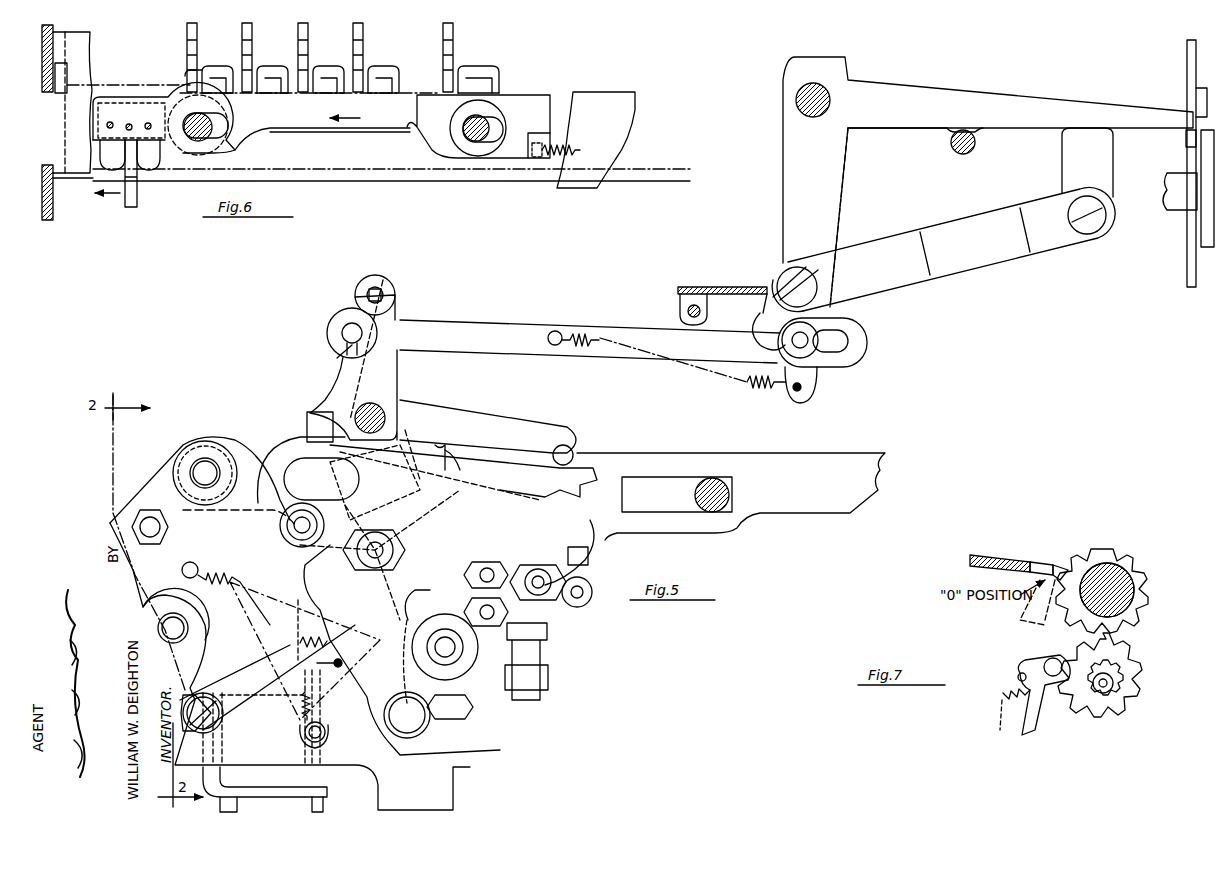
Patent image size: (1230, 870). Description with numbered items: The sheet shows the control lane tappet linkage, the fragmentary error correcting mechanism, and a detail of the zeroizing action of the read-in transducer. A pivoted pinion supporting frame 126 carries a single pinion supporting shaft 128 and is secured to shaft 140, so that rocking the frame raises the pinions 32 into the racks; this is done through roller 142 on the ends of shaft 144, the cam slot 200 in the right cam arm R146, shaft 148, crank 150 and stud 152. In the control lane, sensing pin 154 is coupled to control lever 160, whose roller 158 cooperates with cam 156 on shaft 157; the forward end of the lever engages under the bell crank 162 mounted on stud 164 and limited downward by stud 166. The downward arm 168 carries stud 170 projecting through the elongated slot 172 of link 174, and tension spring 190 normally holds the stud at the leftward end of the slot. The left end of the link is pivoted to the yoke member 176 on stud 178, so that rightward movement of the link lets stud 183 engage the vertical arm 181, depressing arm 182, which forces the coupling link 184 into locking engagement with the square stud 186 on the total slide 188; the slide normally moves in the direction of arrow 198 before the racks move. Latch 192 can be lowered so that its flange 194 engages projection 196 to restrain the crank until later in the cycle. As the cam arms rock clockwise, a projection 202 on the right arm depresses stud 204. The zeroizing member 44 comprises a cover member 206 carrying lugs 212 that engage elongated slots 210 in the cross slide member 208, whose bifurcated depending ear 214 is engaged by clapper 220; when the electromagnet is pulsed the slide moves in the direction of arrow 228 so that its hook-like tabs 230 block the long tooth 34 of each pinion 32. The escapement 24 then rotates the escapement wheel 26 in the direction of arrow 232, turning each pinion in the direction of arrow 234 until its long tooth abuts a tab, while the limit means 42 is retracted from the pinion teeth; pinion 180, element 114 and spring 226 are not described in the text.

In FIG. 7, the escapement 24 is at (998, 703).
In FIG. 7, the escapement wheel 26 is at (1147, 650).
In FIG. 6, the pinion 32 is at (187, 43).
In FIG. 5, the pinion 32 is at (438, 442).
In FIG. 7, the pinion 32 is at (1132, 555).
In FIG. 7, the long tooth 34 is at (1158, 572).
In FIG. 6, the limit means 42 is at (185, 80).
In FIG. 7, the limit means 42 is at (1020, 620).
In FIG. 6, the zeroizing member 44 is at (535, 82).
In FIG. 7, the zeroizing member 44 is at (982, 553).
In FIG. 7, the small pinion 114 is at (1100, 700).
In FIG. 6, the pinion supporting frame 126 is at (52, 214).
In FIG. 5, the pinion supporting frame 126 is at (240, 440).
In FIG. 7, the pinion supporting shaft 128 is at (1125, 585).
In FIG. 5, the shaft 140 is at (205, 473).
In FIG. 5, the roller 142 is at (450, 448).
In FIG. 5, the shaft 144 is at (408, 445).
In FIG. 5, the right cam arm R146 is at (270, 460).
In FIG. 5, the shaft 148 is at (416, 730).
In FIG. 5, the crank 150 is at (425, 620).
In FIG. 5, the stud 152 is at (400, 558).
In FIG. 5, the sensing pin 154 is at (1190, 62).
In FIG. 5, the cam 156 is at (1189, 245).
In FIG. 5, the shaft 157 is at (1170, 192).
In FIG. 5, the roller 158 is at (1196, 100).
In FIG. 5, the control lever 160 is at (1186, 140).
In FIG. 5, the bell crank 162 is at (1078, 128).
In FIG. 5, the stud 164 is at (800, 95).
In FIG. 5, the stud 166 is at (952, 147).
In FIG. 5, the downward arm 168 is at (808, 195).
In FIG. 5, the stud 170 is at (805, 345).
In FIG. 5, the elongated slot 172 is at (845, 340).
In FIG. 5, the link 174 is at (525, 348).
In FIG. 5, the yoke member 176 is at (348, 365).
In FIG. 5, the stud 178 is at (372, 405).
In FIG. 5, the cam 180 is at (360, 467).
In FIG. 5, the vertical arm 181 is at (398, 312).
In FIG. 5, the arm 182 is at (488, 425).
In FIG. 5, the stud 183 is at (372, 285).
In FIG. 5, the coupling link 184 is at (597, 497).
In FIG. 5, the square stud 186 is at (590, 565).
In FIG. 5, the total slide 188 is at (820, 470).
In FIG. 5, the tension spring 190 is at (755, 388).
In FIG. 5, the latch 192 is at (730, 280).
In FIG. 5, the flange 194 is at (782, 283).
In FIG. 5, the projection 196 is at (757, 325).
In FIG. 5, the arrow 198 is at (860, 480).
In FIG. 5, the cam slot 200 is at (303, 462).
In FIG. 5, the projection 202 is at (552, 455).
In FIG. 5, the stud 204 is at (560, 605).
In FIG. 6, the cover member 206 is at (600, 135).
In FIG. 6, the cross slide member 208 is at (321, 122).
In FIG. 7, the cross slide member 208 is at (1005, 558).
In FIG. 6, the elongated slots 210 is at (212, 125).
In FIG. 6, the lugs 212 is at (200, 130).
In FIG. 6, the bifurcated depending ear 214 is at (150, 170).
In FIG. 6, the clapper 220 is at (128, 207).
In FIG. 6, the spring 226 is at (555, 158).
In FIG. 6, the arrow 228 is at (347, 133).
In FIG. 6, the hook-like tabs 230 is at (210, 68).
In FIG. 7, the hook-like tabs 230 is at (1053, 562).
In FIG. 7, the arrow 232 is at (1148, 730).
In FIG. 7, the arrow 234 is at (1070, 533).